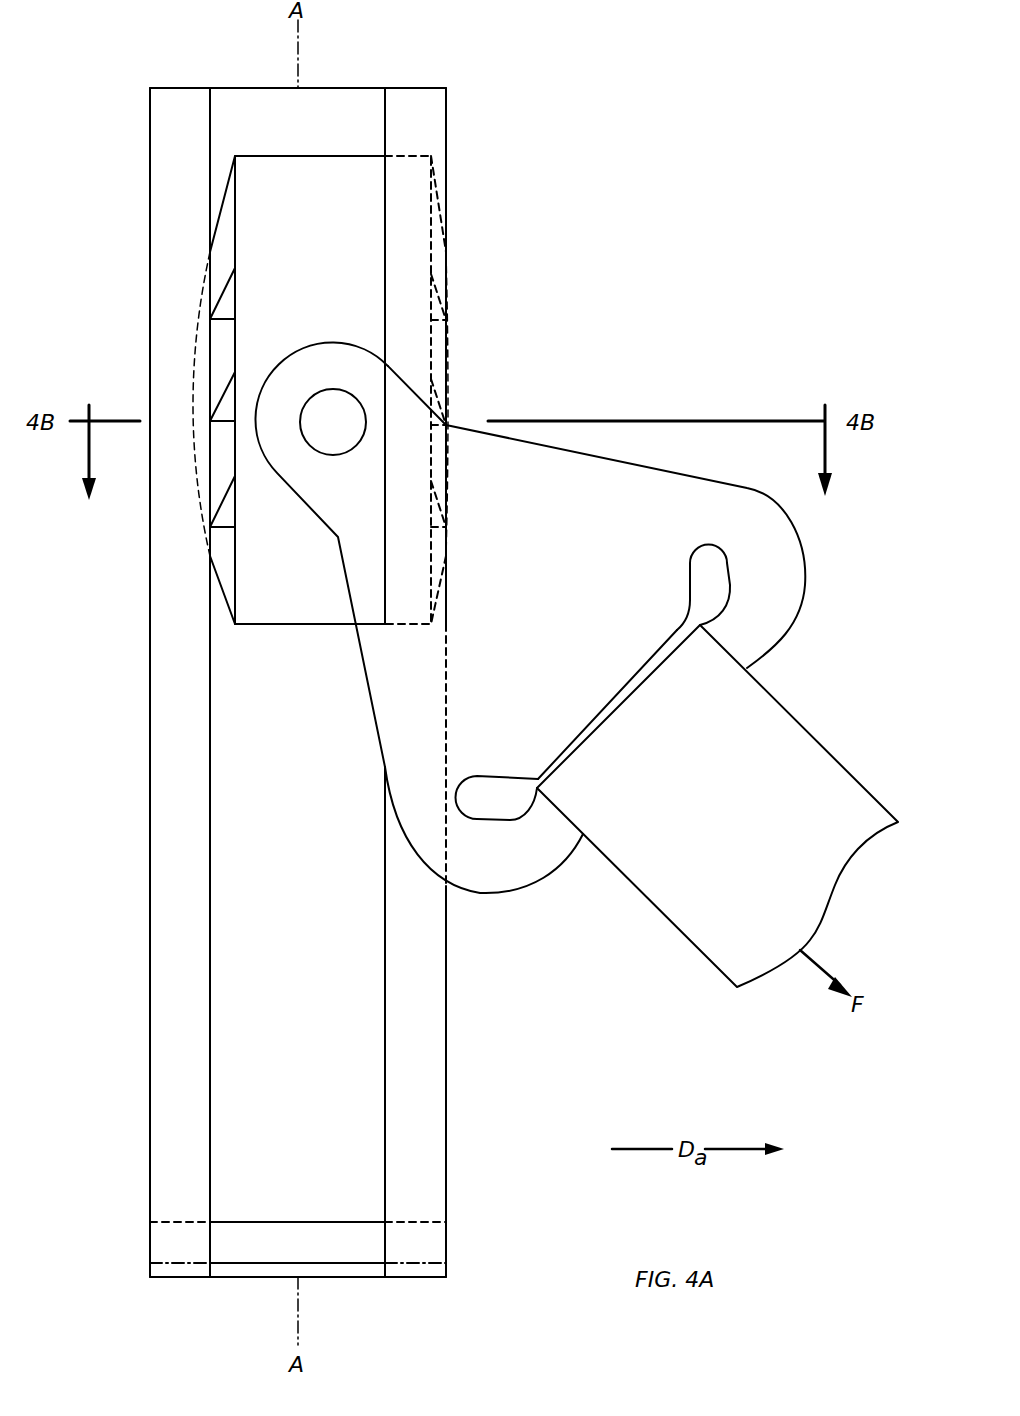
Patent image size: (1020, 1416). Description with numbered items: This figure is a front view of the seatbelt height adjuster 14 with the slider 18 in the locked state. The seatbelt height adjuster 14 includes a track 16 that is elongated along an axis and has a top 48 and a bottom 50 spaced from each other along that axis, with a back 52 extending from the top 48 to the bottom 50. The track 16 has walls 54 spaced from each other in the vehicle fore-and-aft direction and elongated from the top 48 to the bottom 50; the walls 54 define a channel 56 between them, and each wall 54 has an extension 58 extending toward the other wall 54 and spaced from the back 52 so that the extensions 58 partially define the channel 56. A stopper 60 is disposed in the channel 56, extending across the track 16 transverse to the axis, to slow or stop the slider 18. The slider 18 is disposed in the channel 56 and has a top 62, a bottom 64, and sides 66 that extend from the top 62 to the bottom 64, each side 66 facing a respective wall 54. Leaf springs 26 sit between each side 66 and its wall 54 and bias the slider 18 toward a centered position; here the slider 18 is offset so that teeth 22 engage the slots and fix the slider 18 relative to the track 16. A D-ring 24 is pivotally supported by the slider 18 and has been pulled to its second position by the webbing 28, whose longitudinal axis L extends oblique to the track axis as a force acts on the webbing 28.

The seatbelt height adjuster 14 is at (578, 125).
The track 16 is at (421, 78).
The slider 18 is at (254, 148).
The teeth 22 is at (222, 290).
The D-ring 24 is at (778, 643).
The leaf springs 26 is at (222, 203).
The webbing 28 is at (685, 940).
The top 48 is at (360, 88).
The bottom 50 is at (350, 1278).
The back 52 is at (312, 876).
The walls 54 is at (150, 990).
The channel 56 is at (238, 1201).
The extension 58 is at (170, 1078).
The stopper 60 is at (337, 1222).
The top 62 is at (338, 156).
The bottom 64 is at (278, 625).
The sides 66 is at (235, 578).
The longitudinal axis L is at (618, 700).